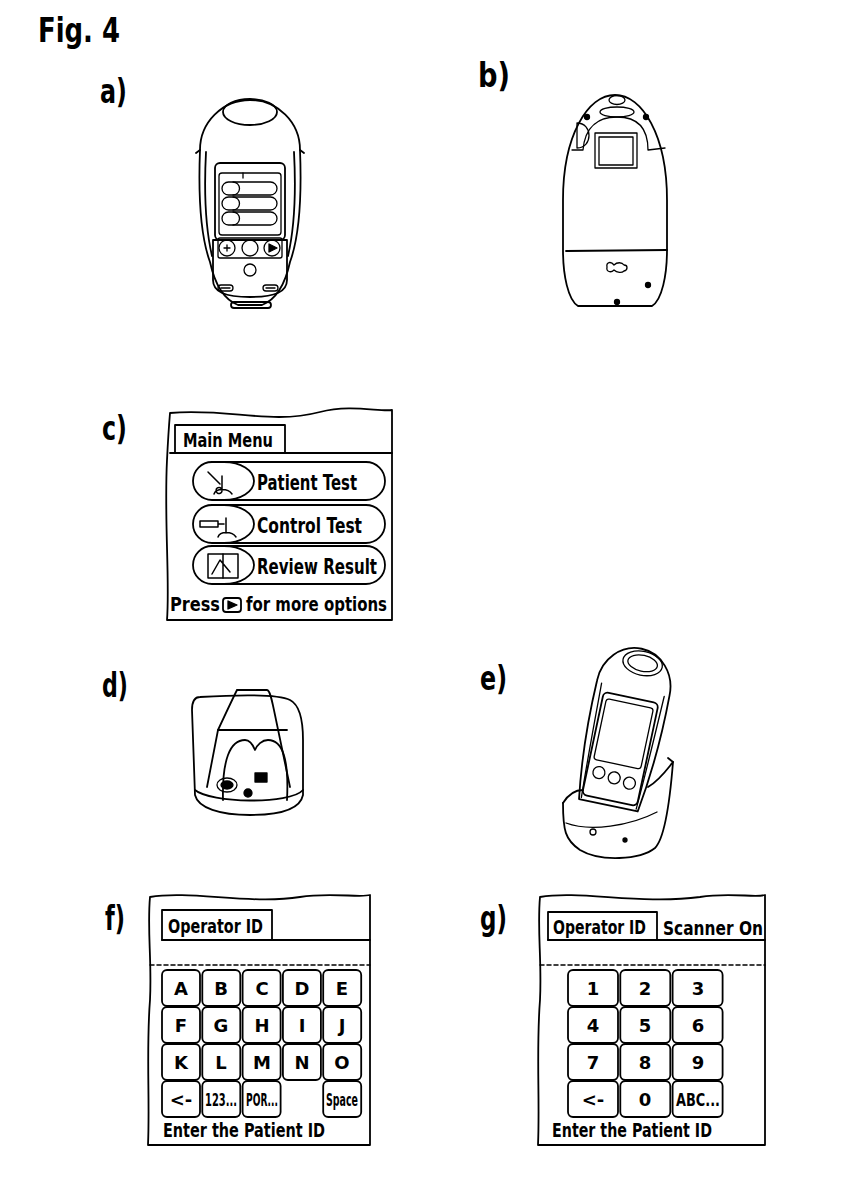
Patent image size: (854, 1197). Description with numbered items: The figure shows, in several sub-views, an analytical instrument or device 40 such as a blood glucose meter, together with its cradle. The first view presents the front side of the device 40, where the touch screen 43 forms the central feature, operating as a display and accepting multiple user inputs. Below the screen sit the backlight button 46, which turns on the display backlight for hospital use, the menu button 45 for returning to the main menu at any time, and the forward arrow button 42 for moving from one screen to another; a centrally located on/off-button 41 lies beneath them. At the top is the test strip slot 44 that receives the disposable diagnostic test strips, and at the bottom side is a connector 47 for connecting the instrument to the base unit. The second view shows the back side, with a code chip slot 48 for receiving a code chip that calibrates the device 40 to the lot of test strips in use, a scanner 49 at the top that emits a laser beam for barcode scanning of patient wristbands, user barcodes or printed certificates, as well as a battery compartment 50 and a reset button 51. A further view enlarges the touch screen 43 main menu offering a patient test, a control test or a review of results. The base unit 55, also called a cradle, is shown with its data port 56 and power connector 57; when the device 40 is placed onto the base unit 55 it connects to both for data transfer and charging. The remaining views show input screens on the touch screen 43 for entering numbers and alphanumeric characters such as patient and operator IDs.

The analytical instrument 40 is at (442, 430).
The on/off-button 41 is at (256, 270).
The forward arrow button 42 is at (276, 250).
The touch screen 43 is at (267, 190).
The test strip slot 44 is at (252, 97).
The menu button 45 is at (247, 248).
The backlight button 46 is at (230, 248).
The connector 47 is at (248, 305).
The code chip slot 48 is at (573, 137).
The scanner 49 is at (616, 95).
The battery compartment 50 is at (612, 268).
The reset button 51 is at (649, 288).
The base unit 55 is at (429, 764).
The data port 56 is at (217, 786).
The power connector 57 is at (268, 777).